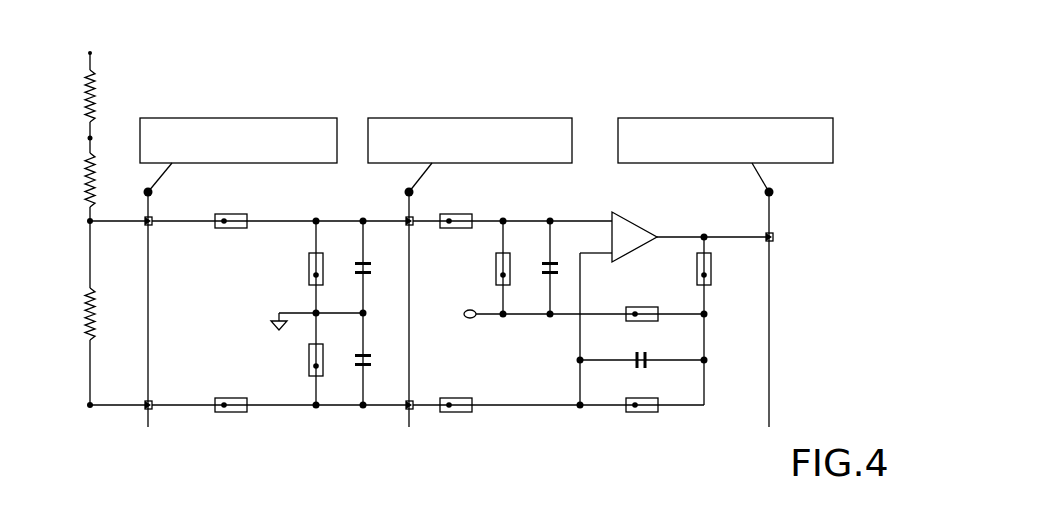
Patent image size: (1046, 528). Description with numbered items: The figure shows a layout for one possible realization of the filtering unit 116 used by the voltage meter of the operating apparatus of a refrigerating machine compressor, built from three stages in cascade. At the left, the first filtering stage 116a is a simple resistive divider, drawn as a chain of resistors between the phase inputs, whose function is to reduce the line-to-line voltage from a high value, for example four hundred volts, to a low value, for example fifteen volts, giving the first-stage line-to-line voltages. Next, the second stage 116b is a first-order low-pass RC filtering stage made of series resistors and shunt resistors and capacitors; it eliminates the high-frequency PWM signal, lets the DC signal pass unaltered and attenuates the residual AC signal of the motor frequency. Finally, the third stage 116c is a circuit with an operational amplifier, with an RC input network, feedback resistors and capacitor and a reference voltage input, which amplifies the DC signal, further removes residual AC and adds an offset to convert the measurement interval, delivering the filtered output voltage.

The filtering unit 116 is at (698, 80).
The first filtering stage 116a is at (148, 440).
The second stage 116b is at (408, 440).
The third stage 116c is at (769, 440).